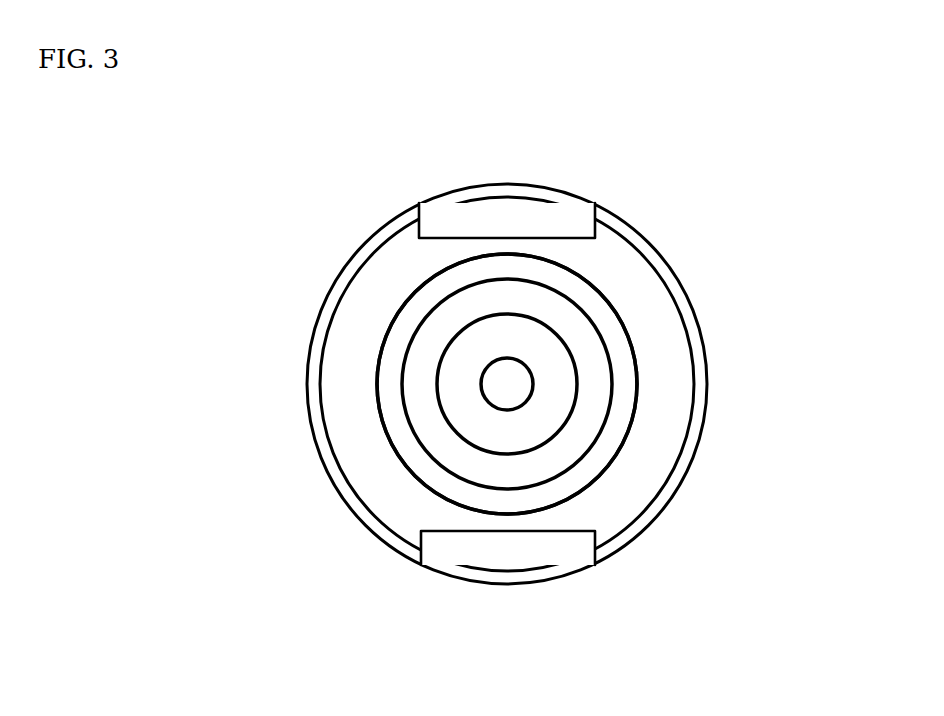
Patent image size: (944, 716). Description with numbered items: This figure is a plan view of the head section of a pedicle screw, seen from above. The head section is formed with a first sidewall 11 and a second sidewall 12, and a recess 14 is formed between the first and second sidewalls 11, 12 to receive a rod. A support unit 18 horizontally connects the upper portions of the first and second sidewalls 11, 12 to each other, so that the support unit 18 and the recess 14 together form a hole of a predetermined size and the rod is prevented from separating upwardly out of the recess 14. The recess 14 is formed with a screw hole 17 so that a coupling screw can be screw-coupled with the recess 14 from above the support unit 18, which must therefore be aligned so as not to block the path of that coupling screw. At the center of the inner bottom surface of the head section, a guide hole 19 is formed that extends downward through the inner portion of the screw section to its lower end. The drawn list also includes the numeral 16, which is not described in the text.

The first sidewall 11 is at (313, 383).
The second sidewall 12 is at (704, 378).
The recess 14 is at (513, 200).
The inner tube 16 is at (562, 461).
The screw hole 17 is at (393, 337).
The support unit 18 is at (582, 510).
The guide hole 19 is at (509, 384).